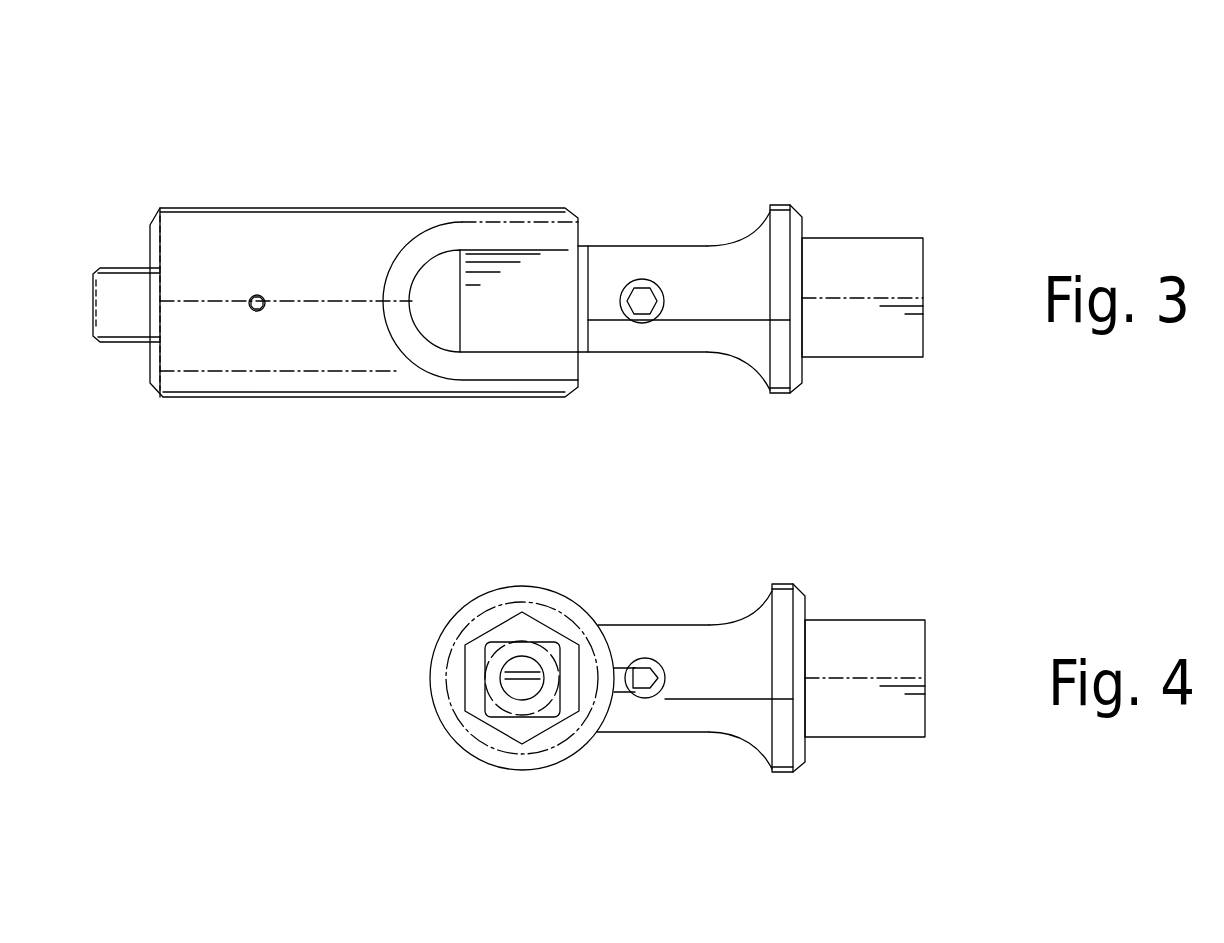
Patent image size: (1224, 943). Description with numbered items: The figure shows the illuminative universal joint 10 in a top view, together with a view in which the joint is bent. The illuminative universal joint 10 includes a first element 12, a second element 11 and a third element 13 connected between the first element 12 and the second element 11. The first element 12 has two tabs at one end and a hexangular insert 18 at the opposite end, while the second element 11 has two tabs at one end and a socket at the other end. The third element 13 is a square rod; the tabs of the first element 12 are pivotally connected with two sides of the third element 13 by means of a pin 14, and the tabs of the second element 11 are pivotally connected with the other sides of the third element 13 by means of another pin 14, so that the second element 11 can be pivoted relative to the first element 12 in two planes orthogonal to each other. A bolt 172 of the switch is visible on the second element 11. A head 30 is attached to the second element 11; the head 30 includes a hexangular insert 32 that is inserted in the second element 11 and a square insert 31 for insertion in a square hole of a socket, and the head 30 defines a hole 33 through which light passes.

In FIG. 3, the illuminative universal joint 10 is at (528, 176).
In FIG. 4, the illuminative universal joint 10 is at (712, 588).
In FIG. 3, the second element 11 is at (348, 238).
In FIG. 4, the second element 11 is at (560, 770).
In FIG. 3, the first element 12 is at (758, 275).
In FIG. 4, the first element 12 is at (748, 720).
In FIG. 3, the third element 13 is at (484, 295).
In FIG. 3, the pin 14 is at (641, 300).
In FIG. 4, the pin 14 is at (645, 690).
In FIG. 3, the hexangular insert 18 is at (890, 265).
In FIG. 4, the hexangular insert 18 is at (896, 717).
In FIG. 3, the head 30 is at (100, 402).
In FIG. 4, the head 30 is at (304, 630).
In FIG. 3, the square insert 31 is at (125, 290).
In FIG. 4, the square insert 31 is at (485, 652).
In FIG. 4, the hexangular insert 32 is at (512, 630).
In FIG. 4, the hole 33 is at (525, 685).
In FIG. 3, the bolt 172 is at (257, 295).